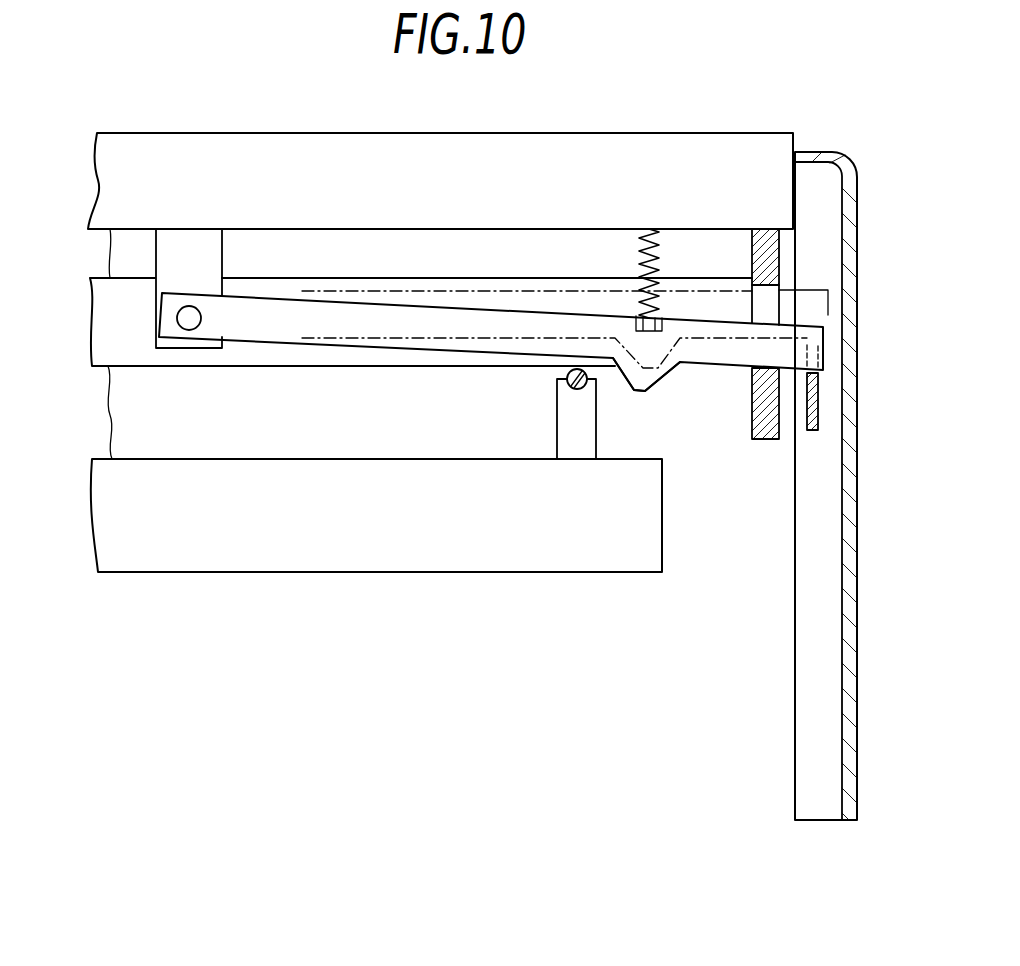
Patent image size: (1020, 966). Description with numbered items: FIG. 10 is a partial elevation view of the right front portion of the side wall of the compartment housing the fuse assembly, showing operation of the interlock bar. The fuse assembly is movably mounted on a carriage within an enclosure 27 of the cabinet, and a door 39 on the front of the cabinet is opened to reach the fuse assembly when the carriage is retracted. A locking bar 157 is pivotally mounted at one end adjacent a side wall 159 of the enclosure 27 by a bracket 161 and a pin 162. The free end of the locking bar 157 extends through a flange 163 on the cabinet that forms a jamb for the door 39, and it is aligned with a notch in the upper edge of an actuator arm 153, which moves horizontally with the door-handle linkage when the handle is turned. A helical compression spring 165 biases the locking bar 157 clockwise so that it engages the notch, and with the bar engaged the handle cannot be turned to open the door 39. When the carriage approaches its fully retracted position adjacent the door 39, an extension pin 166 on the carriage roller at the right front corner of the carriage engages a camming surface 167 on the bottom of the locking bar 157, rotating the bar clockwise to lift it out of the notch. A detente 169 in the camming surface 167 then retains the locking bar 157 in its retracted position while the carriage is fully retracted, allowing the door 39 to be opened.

The enclosure 27 is at (140, 410).
The door 39 is at (848, 642).
The actuator arm 153 is at (815, 403).
The locking bar 157 is at (277, 335).
The side wall 159 is at (130, 251).
The bracket 161 is at (210, 253).
The pin 162 is at (189, 323).
The flange 163 is at (763, 440).
The helical compression spring 165 is at (637, 250).
The extension pin 166 is at (569, 388).
The camming surface 167 is at (672, 382).
The detente 169 is at (643, 393).